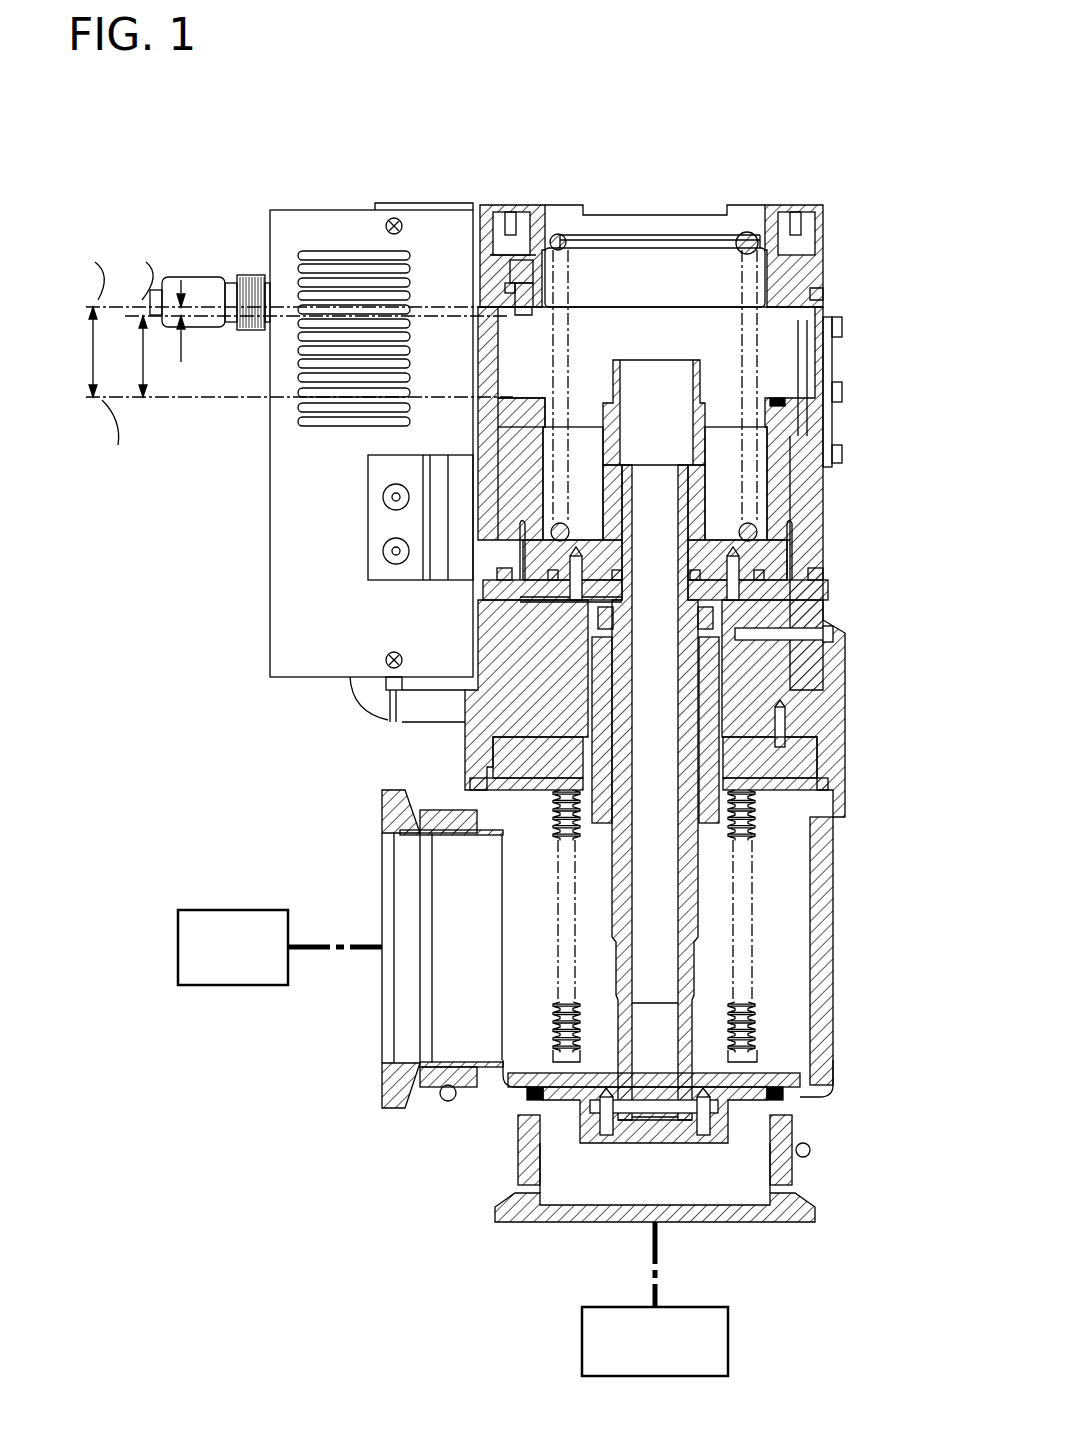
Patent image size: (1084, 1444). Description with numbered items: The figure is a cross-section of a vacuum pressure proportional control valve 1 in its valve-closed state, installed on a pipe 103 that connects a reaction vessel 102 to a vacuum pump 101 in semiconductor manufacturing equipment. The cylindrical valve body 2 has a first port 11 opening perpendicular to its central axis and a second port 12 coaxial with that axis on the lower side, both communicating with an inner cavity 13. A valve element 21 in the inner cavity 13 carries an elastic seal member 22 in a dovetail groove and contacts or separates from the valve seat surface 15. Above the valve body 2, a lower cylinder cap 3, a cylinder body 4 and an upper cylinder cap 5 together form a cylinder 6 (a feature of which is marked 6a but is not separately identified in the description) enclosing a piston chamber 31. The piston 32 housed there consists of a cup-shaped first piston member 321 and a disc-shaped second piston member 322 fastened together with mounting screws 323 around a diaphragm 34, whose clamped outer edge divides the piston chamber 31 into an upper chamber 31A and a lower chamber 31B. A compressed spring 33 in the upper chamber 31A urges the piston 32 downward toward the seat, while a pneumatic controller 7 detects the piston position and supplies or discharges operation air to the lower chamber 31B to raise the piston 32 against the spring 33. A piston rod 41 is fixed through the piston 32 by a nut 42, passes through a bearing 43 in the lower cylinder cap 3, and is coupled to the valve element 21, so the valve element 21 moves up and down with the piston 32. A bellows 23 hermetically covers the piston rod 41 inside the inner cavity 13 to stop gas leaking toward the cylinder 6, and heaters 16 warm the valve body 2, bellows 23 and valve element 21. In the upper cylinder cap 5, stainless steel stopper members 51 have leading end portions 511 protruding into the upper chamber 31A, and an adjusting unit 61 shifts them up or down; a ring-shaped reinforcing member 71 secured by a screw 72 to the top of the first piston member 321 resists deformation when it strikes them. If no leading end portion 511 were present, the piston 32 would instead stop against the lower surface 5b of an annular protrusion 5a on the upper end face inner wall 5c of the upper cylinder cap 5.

The vacuum pressure proportional control valve 1 is at (615, 103).
The valve body 2 is at (812, 926).
The lower cylinder cap 3 is at (818, 610).
The cylinder body 4 is at (817, 563).
The upper cylinder cap 5 is at (818, 259).
The annular protrusion 5a is at (818, 292).
The lower surface 5b is at (810, 322).
The upper end face inner wall 5c is at (560, 236).
The cylinder 6 is at (654, 233).
The seat surface 6a is at (578, 232).
The pneumatic controller 7 is at (270, 220).
The first port 11 is at (403, 1000).
The second port 12 is at (707, 1187).
The inner cavity 13 is at (783, 970).
The valve seat surface 15 is at (483, 1090).
The heaters 16 is at (513, 752).
The valve element 21 is at (732, 1120).
The elastic seal member 22 is at (780, 1103).
The bellows 23 is at (757, 1017).
The piston chamber 31 is at (880, 483).
The upper chamber 31A is at (790, 493).
The lower chamber 31B is at (792, 533).
The piston 32 is at (785, 464).
The first piston member 321 is at (535, 460).
The second piston member 322 is at (530, 590).
The mounting screws 323 is at (580, 597).
The spring 33 is at (748, 234).
The diaphragm 34 is at (548, 530).
The piston rod 41 is at (695, 884).
The nut 42 is at (706, 410).
The bearing 43 is at (707, 687).
The stopper member 51 is at (525, 300).
The leading end portion 511 is at (512, 278).
The adjusting unit 61 is at (497, 218).
The reinforcing member 71 is at (527, 402).
The screw 72 is at (777, 397).
The vacuum pump 101 is at (240, 910).
The reaction vessel 102 is at (728, 1327).
The pipe 103 is at (338, 945).